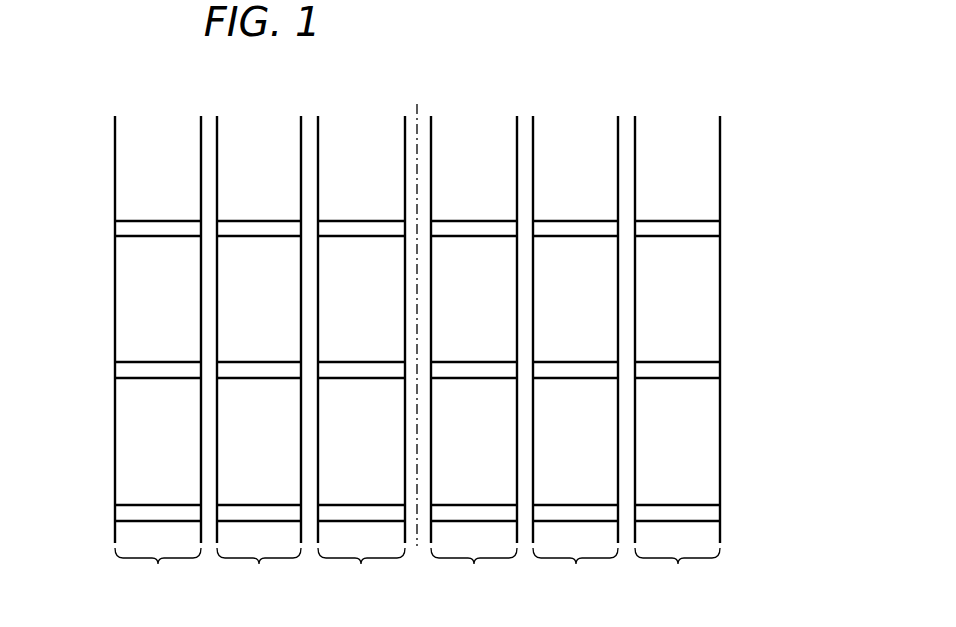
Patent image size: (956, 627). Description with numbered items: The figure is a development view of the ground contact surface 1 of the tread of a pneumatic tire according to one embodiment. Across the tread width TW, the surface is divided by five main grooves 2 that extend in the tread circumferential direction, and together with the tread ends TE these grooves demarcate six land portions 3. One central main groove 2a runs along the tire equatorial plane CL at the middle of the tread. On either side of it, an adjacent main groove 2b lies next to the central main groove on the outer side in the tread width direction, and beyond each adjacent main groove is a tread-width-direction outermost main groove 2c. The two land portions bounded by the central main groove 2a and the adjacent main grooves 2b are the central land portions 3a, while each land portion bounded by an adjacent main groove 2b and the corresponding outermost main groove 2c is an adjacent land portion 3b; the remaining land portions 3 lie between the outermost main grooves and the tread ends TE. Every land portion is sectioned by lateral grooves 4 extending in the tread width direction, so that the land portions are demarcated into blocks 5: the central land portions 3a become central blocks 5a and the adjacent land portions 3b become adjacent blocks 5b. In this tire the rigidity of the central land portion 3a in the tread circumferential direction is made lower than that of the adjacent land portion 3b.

The ground contact surface 1 is at (578, 57).
The tread width TW is at (118, 70).
The tire equatorial plane CL is at (417, 314).
The tread ends TE is at (115, 171).
The main grooves 2 is at (417, 575).
The central main groove 2a is at (411, 537).
The adjacent main grooves 2b is at (310, 537).
The outermost main groove 2c is at (208, 537).
The land portions 3 is at (417, 571).
The central land portions 3a is at (417, 571).
The adjacent land portions 3b is at (417, 571).
The lateral grooves 4 is at (706, 229).
The blocks 5 is at (154, 147).
The central blocks 5a is at (356, 147).
The adjacent blocks 5b is at (249, 147).